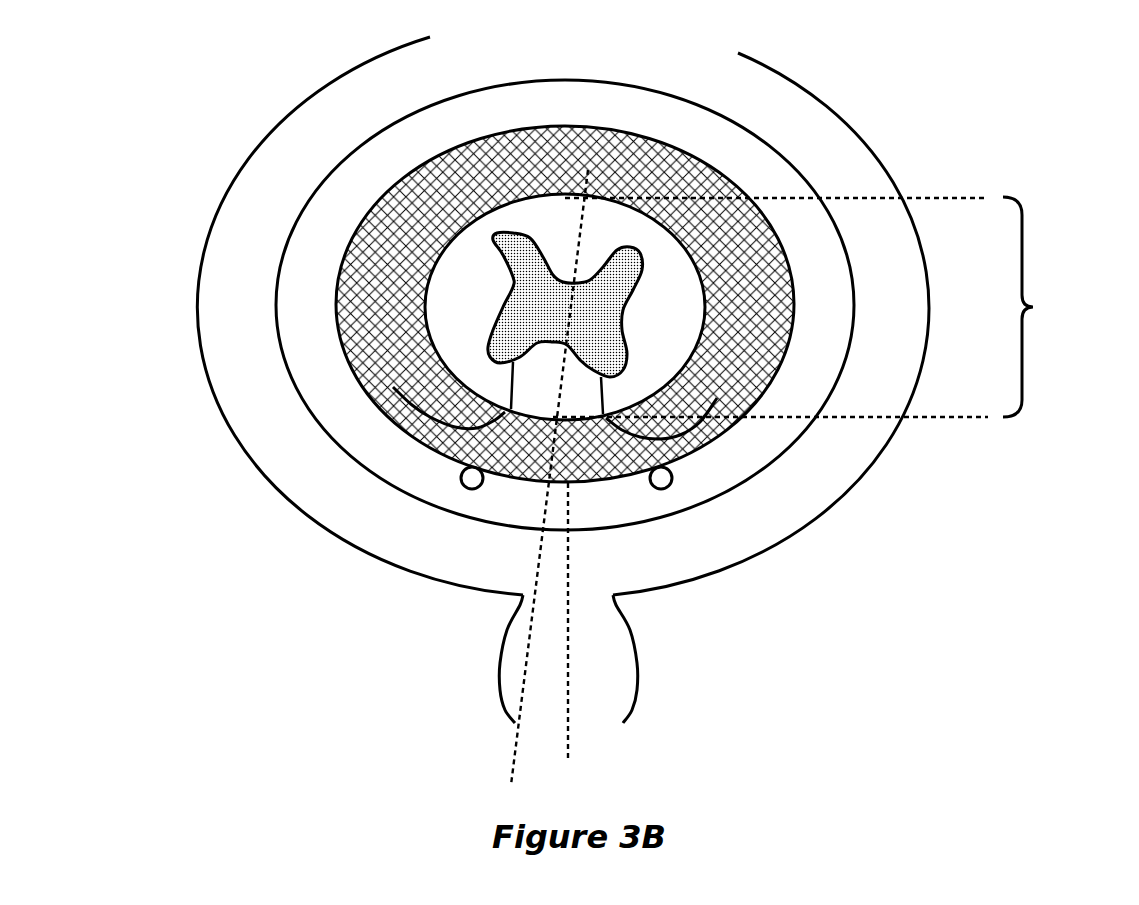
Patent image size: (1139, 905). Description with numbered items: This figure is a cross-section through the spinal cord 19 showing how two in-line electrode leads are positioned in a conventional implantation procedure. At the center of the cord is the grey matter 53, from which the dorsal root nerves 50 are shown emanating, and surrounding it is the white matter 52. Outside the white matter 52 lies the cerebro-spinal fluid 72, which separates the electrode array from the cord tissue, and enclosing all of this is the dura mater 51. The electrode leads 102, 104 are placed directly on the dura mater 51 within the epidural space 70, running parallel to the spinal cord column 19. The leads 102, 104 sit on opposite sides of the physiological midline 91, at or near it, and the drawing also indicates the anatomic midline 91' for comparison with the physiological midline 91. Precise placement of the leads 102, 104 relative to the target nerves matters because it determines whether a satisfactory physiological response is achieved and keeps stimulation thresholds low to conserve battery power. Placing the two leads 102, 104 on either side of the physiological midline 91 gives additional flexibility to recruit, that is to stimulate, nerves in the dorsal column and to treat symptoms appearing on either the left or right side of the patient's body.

The spinal cord 19 is at (1033, 307).
The dorsal root nerves 50 is at (413, 405).
The dura mater 51 is at (833, 498).
The white matter 52 is at (522, 393).
The grey matter 53 is at (545, 321).
The epidural space 70 is at (498, 516).
The cerebro-spinal fluid 72 is at (543, 458).
The physiological midline 91 is at (419, 501).
The anatomic midline 91' is at (707, 635).
The lead 102 is at (472, 489).
The lead 104 is at (661, 489).